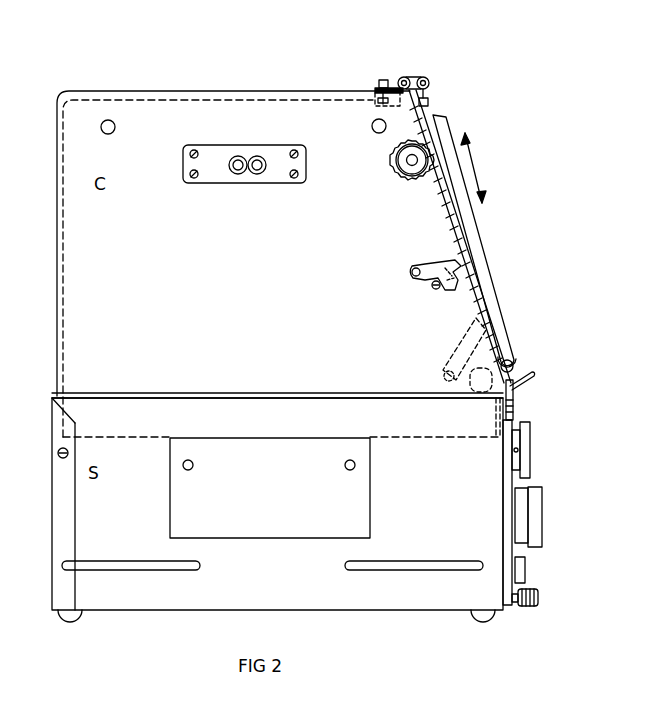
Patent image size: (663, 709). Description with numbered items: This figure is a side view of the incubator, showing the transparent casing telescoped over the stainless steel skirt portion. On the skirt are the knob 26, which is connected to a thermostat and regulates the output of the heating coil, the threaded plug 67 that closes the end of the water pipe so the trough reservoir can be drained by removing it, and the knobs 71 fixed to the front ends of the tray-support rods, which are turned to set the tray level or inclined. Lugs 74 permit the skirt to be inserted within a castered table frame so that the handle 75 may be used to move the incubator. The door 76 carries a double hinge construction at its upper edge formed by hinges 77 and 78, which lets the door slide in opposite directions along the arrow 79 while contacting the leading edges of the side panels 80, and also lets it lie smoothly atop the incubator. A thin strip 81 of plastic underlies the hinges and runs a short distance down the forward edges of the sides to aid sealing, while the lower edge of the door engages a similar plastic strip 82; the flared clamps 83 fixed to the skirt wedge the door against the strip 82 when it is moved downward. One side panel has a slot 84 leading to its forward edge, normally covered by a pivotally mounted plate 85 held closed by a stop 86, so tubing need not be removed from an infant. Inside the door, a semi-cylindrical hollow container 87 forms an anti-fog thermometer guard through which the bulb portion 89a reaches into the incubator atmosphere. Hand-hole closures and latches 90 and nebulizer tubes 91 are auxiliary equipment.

The knob 26 is at (542, 509).
The threaded plug 67 is at (539, 597).
The knobs 71 is at (530, 440).
The lugs 74 is at (488, 618).
The handle 75 is at (184, 572).
The door 76 is at (450, 220).
The hinge 77 is at (406, 77).
The hinge 78 is at (429, 84).
The arrow 79 is at (490, 164).
The side panels 80 is at (132, 316).
The thin strip 81 is at (395, 85).
The plastic strip 82 is at (470, 330).
The flared clamps 83 is at (516, 388).
The slot 84 is at (442, 258).
The pivotally mounted plate 85 is at (418, 282).
The stop 86 is at (436, 289).
The semi-cylindrical hollow container 87 is at (392, 158).
The bulb portion 89a is at (412, 163).
The closures and latches 90 is at (481, 268).
The tubes 91 is at (245, 173).